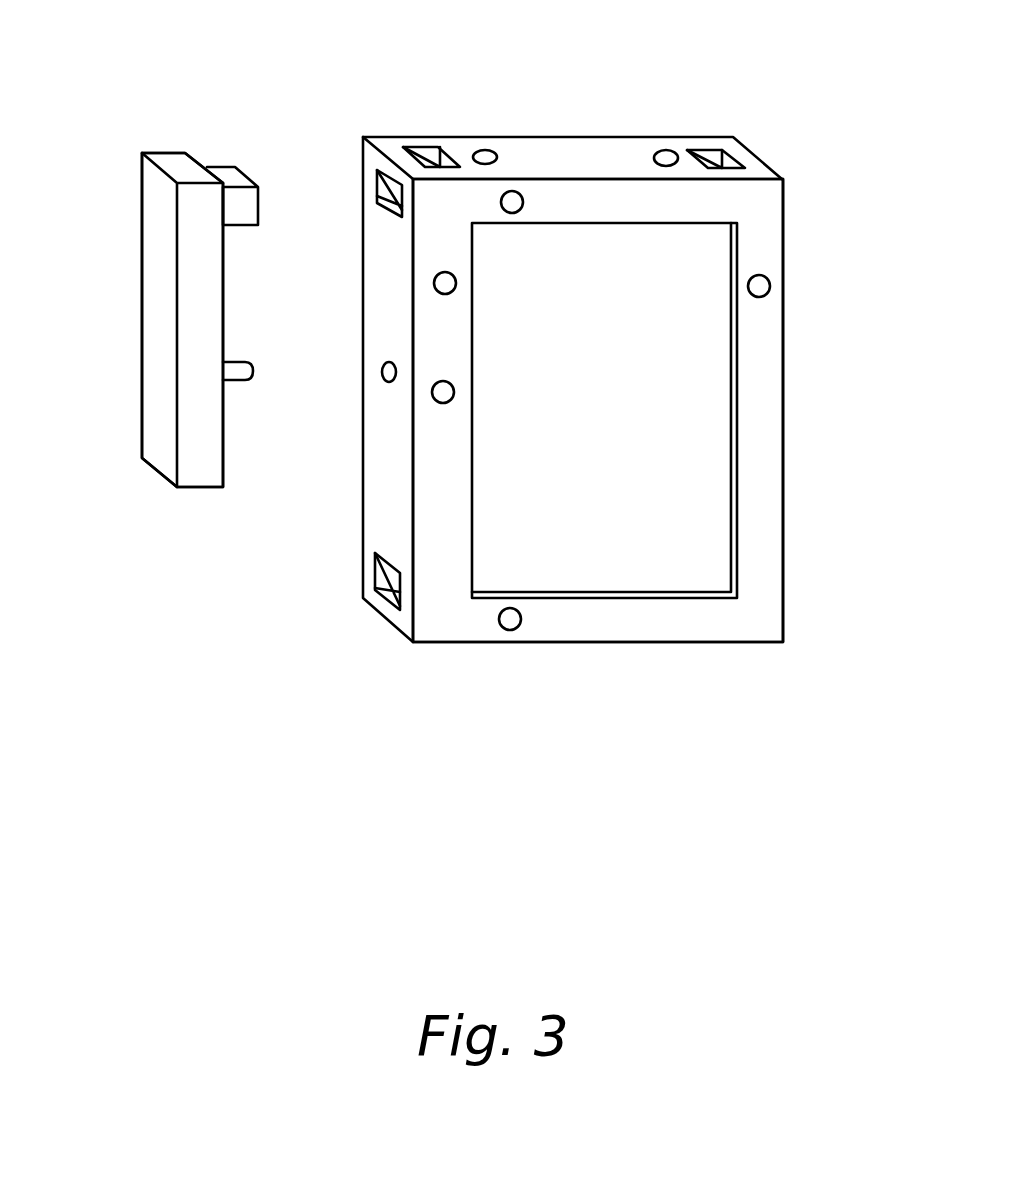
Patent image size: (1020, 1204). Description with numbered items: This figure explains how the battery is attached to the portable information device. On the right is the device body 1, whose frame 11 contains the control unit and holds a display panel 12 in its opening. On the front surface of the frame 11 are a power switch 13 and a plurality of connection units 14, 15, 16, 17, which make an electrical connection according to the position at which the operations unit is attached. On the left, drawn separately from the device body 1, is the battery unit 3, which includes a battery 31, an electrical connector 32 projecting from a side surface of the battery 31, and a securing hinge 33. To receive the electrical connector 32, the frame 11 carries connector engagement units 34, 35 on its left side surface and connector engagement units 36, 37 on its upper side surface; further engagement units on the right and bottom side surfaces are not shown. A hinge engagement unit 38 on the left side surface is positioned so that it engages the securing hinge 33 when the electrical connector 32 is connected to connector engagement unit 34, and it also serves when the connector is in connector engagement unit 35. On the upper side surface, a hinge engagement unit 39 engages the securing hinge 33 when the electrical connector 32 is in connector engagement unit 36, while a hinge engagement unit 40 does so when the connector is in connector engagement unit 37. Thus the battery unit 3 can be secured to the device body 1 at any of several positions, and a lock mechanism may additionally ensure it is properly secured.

The device body 1 is at (828, 340).
The battery unit 3 is at (152, 491).
The frame 11 is at (765, 617).
The display panel 12 is at (648, 555).
The power switch 13 is at (455, 388).
The connection unit 14 is at (457, 283).
The connection unit 15 is at (522, 196).
The connection unit 16 is at (770, 283).
The connection unit 17 is at (508, 632).
The battery 31 is at (153, 284).
The electrical connector 32 is at (230, 177).
The securing hinge 33 is at (235, 382).
The connector engagement unit 34 is at (382, 192).
The connector engagement unit 35 is at (382, 580).
The connector engagement unit 36 is at (430, 155).
The connector engagement unit 37 is at (713, 156).
The hinge engagement unit 38 is at (382, 372).
The hinge engagement unit 39 is at (663, 156).
The hinge engagement unit 40 is at (486, 155).